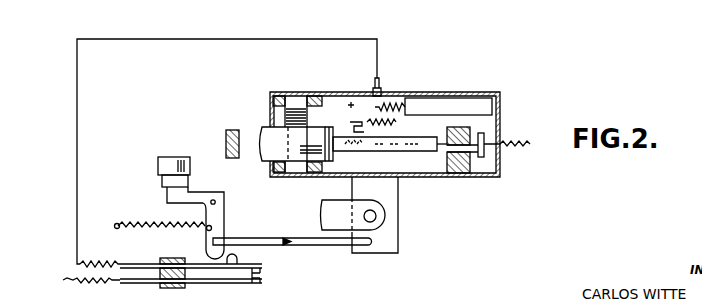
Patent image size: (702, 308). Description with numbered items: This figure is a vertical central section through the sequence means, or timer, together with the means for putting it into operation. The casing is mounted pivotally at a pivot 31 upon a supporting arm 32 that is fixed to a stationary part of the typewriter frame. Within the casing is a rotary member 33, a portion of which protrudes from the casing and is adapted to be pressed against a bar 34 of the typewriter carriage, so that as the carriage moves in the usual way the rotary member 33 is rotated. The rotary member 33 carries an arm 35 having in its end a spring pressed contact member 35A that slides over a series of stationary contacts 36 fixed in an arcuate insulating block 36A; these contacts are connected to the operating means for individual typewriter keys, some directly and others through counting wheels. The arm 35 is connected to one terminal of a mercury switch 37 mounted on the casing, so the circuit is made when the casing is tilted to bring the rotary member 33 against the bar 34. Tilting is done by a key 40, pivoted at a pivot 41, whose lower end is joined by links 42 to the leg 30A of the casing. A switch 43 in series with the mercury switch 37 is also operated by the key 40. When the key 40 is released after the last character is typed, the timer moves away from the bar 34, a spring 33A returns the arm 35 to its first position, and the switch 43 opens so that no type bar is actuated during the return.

The leg 30A is at (398, 245).
The pivot 31 is at (378, 218).
The supporting arm 32 is at (320, 214).
The rotary member 33 is at (270, 130).
The spring 33A is at (303, 118).
The bar 34 is at (224, 140).
The arm 35 is at (383, 140).
The spring pressed contact member 35A is at (441, 152).
The stationary contacts 36 is at (472, 160).
The arcuate insulating block 36A is at (465, 173).
The mercury switch 37 is at (447, 104).
The key 40 is at (166, 196).
The pivot 41 is at (217, 201).
The links 42 is at (305, 246).
The switch 43 is at (261, 284).